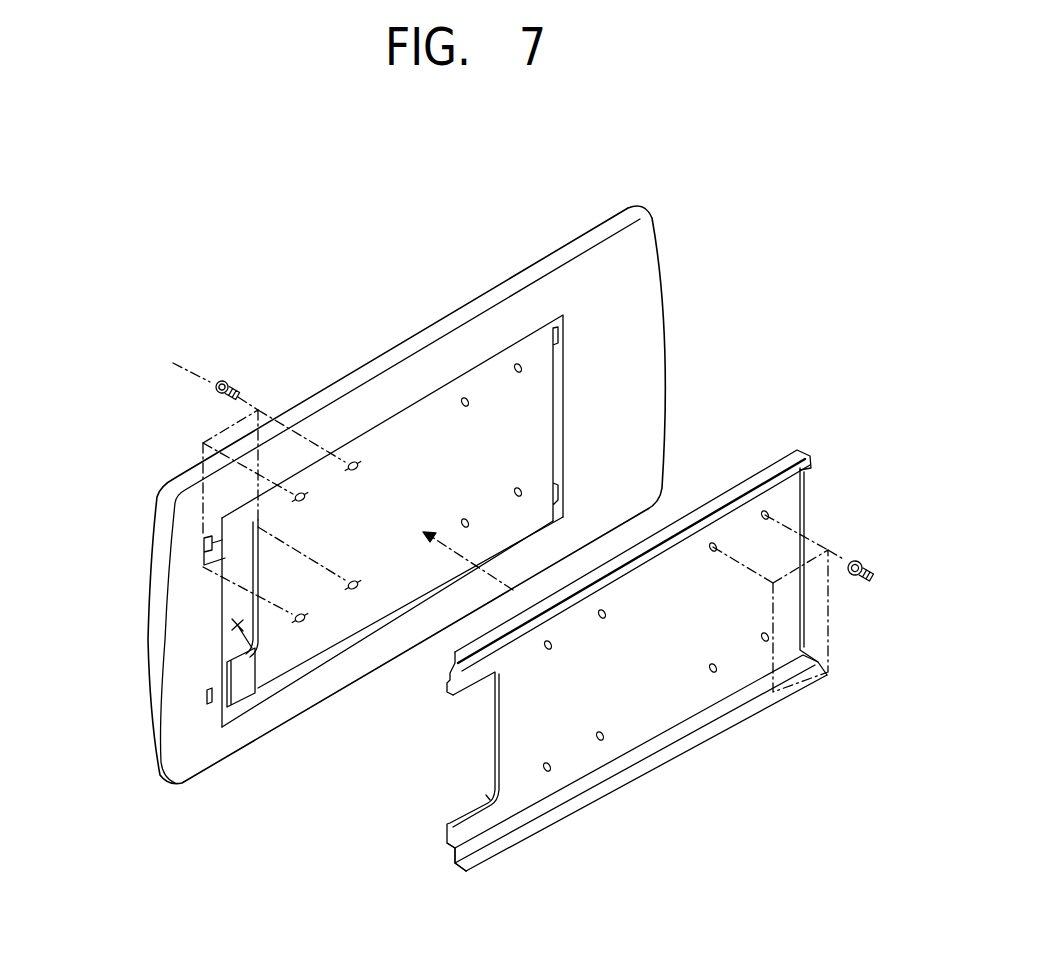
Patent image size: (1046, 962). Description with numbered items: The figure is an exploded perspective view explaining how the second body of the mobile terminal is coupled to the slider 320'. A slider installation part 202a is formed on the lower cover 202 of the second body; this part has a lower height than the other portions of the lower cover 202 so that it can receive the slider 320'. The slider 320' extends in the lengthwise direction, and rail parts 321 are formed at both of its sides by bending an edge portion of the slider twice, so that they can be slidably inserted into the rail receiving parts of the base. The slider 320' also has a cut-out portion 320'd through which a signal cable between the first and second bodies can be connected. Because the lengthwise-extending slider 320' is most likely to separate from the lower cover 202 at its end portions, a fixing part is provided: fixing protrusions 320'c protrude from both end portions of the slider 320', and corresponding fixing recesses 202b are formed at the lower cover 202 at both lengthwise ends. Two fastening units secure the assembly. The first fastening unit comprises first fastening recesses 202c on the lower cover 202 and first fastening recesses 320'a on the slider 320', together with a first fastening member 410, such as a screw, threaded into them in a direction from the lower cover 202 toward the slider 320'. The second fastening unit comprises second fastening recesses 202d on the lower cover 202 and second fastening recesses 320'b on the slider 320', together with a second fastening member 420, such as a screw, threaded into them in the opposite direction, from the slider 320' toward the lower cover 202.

The lower cover 202 is at (602, 257).
The slider installation part 202a is at (405, 443).
The fixing recesses 202b is at (567, 495).
The first fastening recesses 202c is at (356, 592).
The second fastening recesses 202d is at (466, 400).
The first fastening member 410 is at (204, 371).
The second fastening member 420 is at (870, 578).
The slider 320' is at (625, 660).
The first fastening recesses 320'a is at (606, 792).
The second fastening recesses 320'b is at (752, 710).
The fixing protrusions 320'c is at (635, 648).
The cut-out portion 320'd is at (534, 848).
The rail parts 321 is at (480, 874).